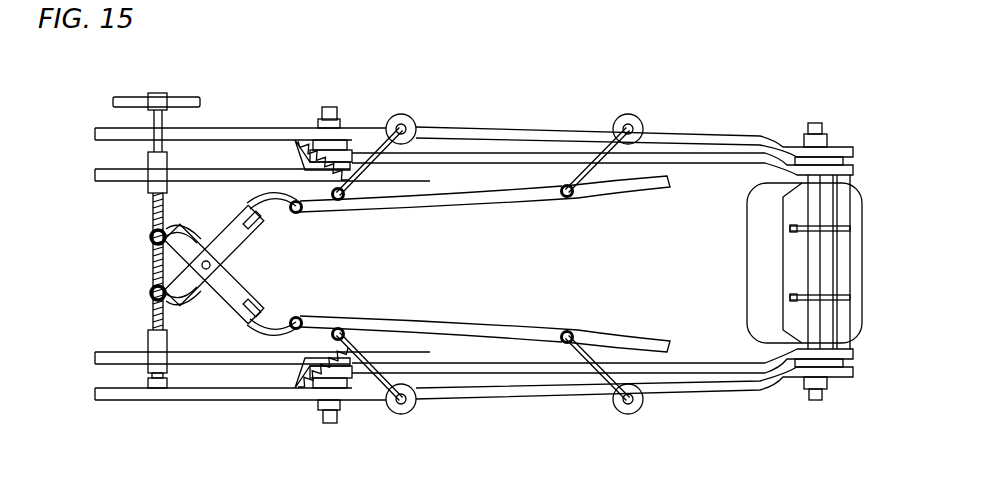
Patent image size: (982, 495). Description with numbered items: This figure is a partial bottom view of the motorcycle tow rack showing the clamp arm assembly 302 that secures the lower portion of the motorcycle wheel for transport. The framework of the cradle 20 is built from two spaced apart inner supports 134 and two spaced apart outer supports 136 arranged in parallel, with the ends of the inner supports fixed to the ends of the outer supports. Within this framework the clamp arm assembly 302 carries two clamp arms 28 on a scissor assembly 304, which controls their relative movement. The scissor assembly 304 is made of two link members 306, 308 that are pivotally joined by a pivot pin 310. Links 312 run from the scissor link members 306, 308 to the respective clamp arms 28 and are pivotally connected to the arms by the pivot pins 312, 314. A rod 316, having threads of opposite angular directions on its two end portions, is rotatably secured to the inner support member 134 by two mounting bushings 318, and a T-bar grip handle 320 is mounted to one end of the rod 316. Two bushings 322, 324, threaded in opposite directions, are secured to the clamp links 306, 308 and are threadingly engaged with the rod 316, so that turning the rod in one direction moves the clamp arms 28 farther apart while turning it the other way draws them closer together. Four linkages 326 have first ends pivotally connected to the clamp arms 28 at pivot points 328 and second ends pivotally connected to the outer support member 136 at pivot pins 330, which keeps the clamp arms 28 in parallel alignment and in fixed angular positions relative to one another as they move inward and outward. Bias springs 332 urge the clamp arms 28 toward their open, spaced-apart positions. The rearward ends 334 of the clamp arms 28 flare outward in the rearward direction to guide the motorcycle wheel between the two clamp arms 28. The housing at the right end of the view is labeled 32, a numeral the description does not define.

The cradle 20 is at (747, 125).
The clamp arms 28 is at (455, 208).
The hitch housing 32 is at (752, 237).
The inner supports 134 is at (203, 170).
The outer supports 136 is at (237, 128).
The clamp arm assembly 302 is at (92, 242).
The scissor assembly 304 is at (233, 265).
The link member 306 is at (240, 293).
The link member 308 is at (222, 238).
The pivot pin 310 is at (208, 272).
The links 312 is at (276, 194).
The pivot pin 314 is at (300, 318).
The rod 316 is at (152, 264).
The mounting bushings 318 is at (155, 173).
The T-bar grip handle 320 is at (128, 98).
The bushing 322 is at (149, 237).
The bushing 324 is at (149, 293).
The linkages 326 is at (366, 150).
The pivot points 328 is at (348, 198).
The pivot pins 330 is at (407, 123).
The bias springs 332 is at (338, 142).
The rearward ends 334 is at (660, 188).